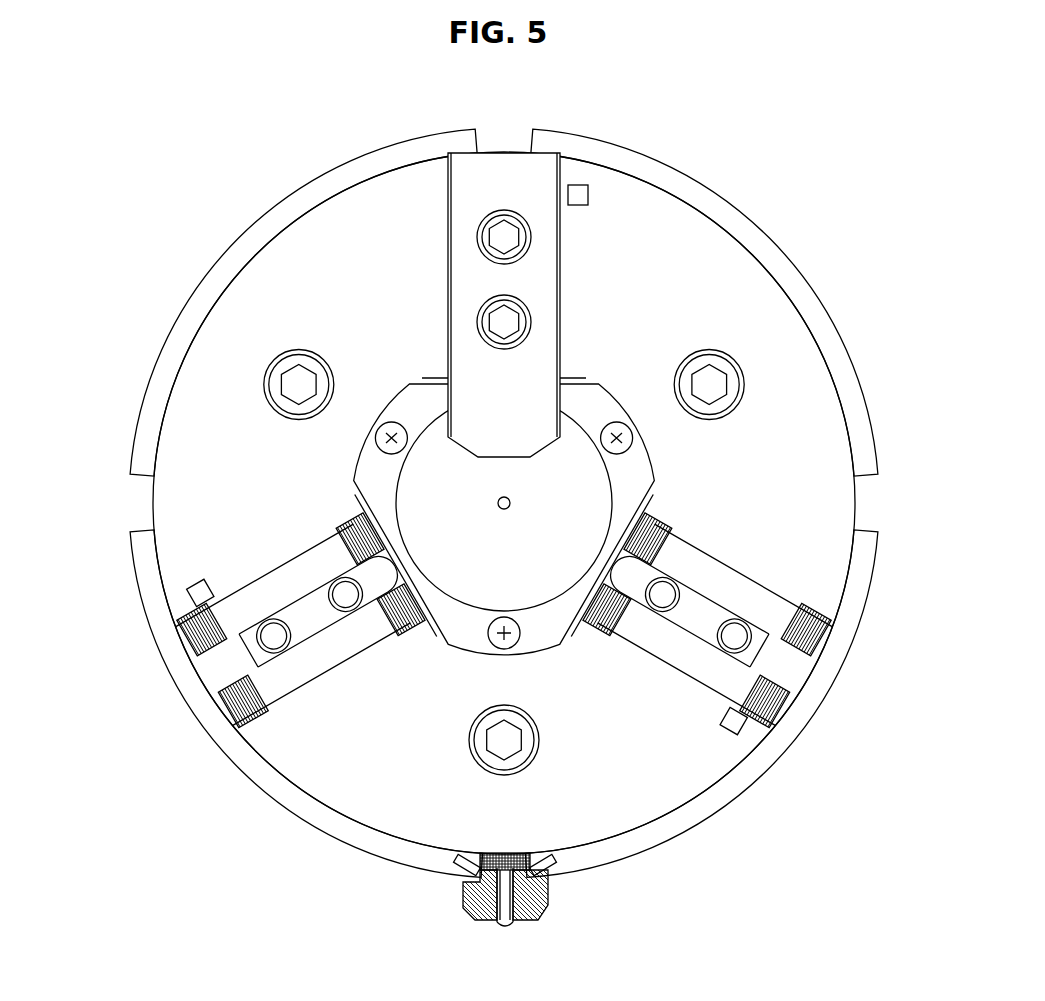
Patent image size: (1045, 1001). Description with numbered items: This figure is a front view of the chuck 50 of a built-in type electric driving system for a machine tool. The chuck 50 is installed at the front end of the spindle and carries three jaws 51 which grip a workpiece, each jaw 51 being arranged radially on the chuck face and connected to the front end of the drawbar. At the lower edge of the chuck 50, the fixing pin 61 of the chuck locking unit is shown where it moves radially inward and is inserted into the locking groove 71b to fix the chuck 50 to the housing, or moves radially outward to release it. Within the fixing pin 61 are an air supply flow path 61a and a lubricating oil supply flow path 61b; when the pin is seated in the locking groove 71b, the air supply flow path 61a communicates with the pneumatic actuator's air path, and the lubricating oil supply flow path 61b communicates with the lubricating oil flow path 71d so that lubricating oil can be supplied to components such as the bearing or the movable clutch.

The chuck 50 is at (688, 240).
The jaw 51 is at (462, 203).
The fixing pin 61 is at (538, 908).
The air supply flow path 61a is at (493, 905).
The lubricating oil supply flow path 61b is at (513, 923).
The locking groove 71b is at (150, 522).
The lubricating oil flow path 71d is at (543, 873).